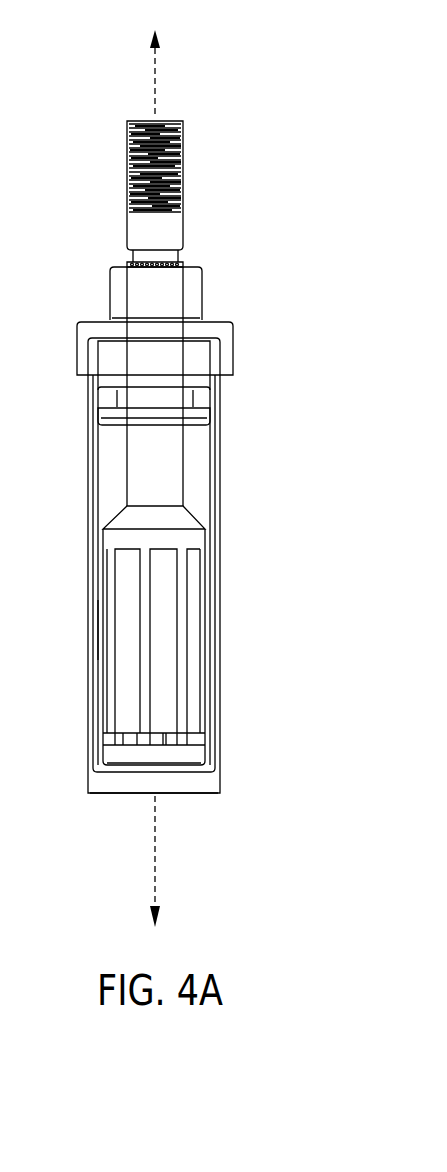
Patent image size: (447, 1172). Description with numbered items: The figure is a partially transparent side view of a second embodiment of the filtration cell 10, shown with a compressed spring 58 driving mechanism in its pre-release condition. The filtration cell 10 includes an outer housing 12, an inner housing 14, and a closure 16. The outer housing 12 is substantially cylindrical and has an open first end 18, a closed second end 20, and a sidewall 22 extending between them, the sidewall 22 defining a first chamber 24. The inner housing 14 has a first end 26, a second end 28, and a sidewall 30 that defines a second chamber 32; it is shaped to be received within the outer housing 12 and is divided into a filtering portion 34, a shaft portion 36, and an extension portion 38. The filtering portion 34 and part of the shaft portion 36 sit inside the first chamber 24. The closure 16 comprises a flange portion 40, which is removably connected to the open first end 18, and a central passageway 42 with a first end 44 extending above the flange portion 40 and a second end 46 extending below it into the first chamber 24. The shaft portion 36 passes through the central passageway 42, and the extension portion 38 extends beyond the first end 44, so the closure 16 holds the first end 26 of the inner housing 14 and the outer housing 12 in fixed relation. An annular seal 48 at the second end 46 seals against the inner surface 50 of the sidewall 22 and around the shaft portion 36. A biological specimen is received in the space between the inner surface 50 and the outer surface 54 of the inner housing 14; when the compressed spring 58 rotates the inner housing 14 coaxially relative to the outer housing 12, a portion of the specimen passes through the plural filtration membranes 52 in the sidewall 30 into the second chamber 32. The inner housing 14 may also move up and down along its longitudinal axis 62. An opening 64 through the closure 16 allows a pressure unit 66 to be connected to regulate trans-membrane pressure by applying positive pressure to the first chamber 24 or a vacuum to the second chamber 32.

The filtration cell 10 is at (252, 195).
The outer housing 12 is at (217, 432).
The inner housing 14 is at (190, 524).
The closure 16 is at (222, 338).
The open first end 18 is at (213, 341).
The closed second end 20 is at (183, 795).
The sidewall 22 is at (207, 606).
The first chamber 24 is at (204, 474).
The first end 26 is at (172, 119).
The second end 28 is at (196, 766).
The sidewall 30 is at (110, 541).
The second chamber 32 is at (136, 114).
The filtering portion 34 is at (100, 629).
The shaft portion 36 is at (130, 463).
The extension portion 38 is at (128, 193).
The flange portion 40 is at (78, 341).
The central passageway 42 is at (108, 292).
The first end 44 is at (125, 266).
The second end 46 is at (105, 421).
The annular seal 48 is at (98, 410).
The inner surface 50 is at (106, 693).
The filtration membrane 52 is at (165, 686).
The outer surface 54 is at (88, 581).
The compressed spring 58 is at (134, 157).
The longitudinal axis 62 is at (156, 866).
The opening 64 is at (208, 318).
The pressure unit 66 is at (212, 321).